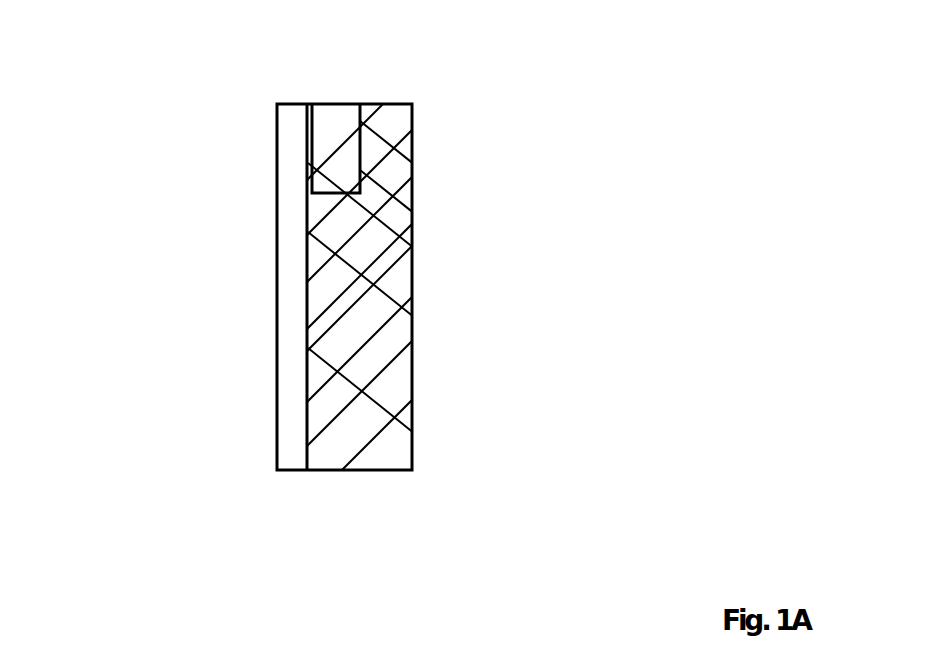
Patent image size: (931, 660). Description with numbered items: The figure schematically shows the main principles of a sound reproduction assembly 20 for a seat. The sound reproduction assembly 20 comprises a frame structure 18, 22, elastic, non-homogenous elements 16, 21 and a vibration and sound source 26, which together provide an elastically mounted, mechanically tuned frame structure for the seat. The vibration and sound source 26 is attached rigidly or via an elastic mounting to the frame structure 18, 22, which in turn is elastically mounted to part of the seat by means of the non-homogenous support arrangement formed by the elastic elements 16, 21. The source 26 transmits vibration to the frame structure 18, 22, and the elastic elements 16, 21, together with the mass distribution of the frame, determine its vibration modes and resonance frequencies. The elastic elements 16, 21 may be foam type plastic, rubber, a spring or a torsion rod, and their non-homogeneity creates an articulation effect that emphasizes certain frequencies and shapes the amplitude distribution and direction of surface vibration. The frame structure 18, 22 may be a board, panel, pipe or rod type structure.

The elastic, non-homogenous element 16 is at (362, 287).
The frame structure 18 is at (183, 287).
The sound reproduction assembly 20 is at (536, 220).
The elastic, non-homogenous element 21 is at (363, 300).
The frame structure 22 is at (293, 183).
The vibration and sound source 26 is at (322, 123).